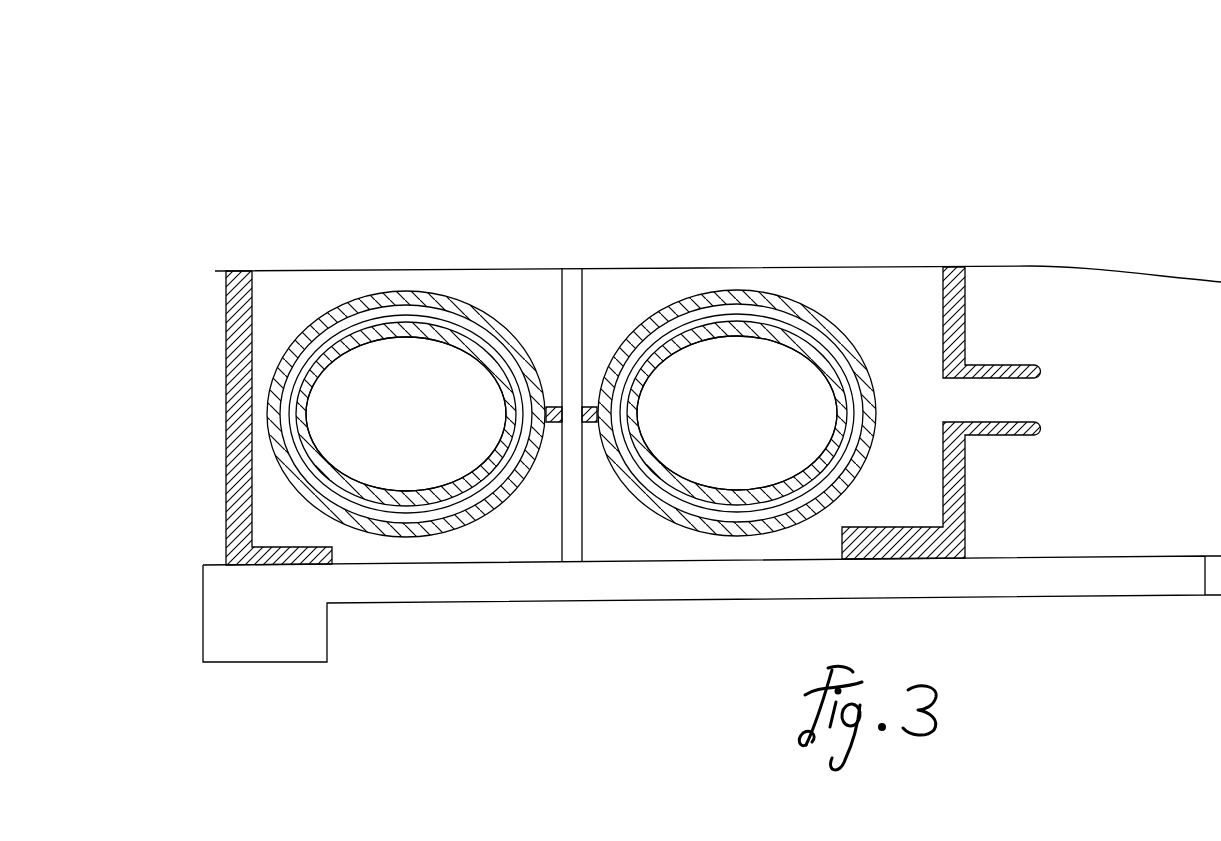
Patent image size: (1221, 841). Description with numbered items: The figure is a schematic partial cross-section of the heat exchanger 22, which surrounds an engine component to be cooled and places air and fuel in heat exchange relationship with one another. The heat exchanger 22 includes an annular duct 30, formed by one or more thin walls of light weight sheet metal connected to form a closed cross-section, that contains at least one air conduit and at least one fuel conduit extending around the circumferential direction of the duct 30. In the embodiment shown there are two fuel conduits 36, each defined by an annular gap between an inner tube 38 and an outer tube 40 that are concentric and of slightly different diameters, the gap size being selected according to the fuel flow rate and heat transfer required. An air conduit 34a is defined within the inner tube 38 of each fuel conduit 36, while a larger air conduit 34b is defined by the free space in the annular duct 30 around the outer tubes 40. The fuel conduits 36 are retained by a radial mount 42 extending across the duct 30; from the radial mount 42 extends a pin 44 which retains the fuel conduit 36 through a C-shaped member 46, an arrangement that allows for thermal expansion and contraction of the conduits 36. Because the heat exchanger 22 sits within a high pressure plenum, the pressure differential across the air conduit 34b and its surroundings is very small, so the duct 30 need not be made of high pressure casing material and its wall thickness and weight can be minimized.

The heat exchanger 22 is at (203, 187).
The annular duct 30 is at (892, 267).
The air conduit 34a is at (730, 358).
The air conduit 34b is at (285, 300).
The fuel conduit 36 is at (667, 487).
The inner tube 38 is at (418, 336).
The outer tube 40 is at (382, 308).
The radial mount 42 is at (570, 292).
The pin 44 is at (588, 407).
The C-shaped member 46 is at (803, 306).